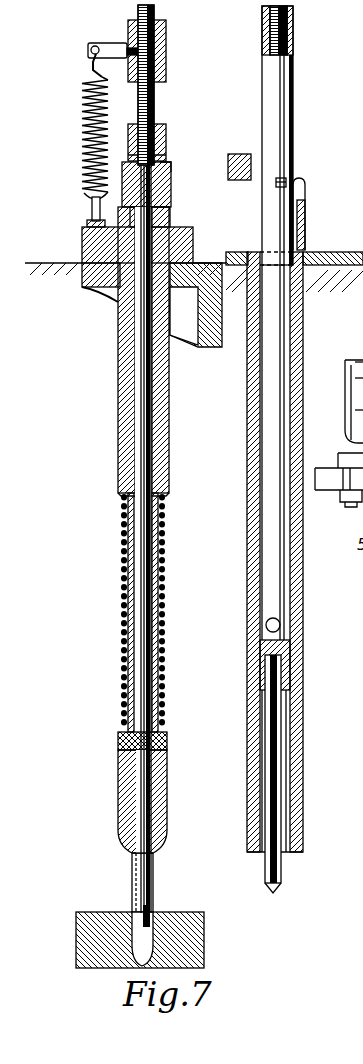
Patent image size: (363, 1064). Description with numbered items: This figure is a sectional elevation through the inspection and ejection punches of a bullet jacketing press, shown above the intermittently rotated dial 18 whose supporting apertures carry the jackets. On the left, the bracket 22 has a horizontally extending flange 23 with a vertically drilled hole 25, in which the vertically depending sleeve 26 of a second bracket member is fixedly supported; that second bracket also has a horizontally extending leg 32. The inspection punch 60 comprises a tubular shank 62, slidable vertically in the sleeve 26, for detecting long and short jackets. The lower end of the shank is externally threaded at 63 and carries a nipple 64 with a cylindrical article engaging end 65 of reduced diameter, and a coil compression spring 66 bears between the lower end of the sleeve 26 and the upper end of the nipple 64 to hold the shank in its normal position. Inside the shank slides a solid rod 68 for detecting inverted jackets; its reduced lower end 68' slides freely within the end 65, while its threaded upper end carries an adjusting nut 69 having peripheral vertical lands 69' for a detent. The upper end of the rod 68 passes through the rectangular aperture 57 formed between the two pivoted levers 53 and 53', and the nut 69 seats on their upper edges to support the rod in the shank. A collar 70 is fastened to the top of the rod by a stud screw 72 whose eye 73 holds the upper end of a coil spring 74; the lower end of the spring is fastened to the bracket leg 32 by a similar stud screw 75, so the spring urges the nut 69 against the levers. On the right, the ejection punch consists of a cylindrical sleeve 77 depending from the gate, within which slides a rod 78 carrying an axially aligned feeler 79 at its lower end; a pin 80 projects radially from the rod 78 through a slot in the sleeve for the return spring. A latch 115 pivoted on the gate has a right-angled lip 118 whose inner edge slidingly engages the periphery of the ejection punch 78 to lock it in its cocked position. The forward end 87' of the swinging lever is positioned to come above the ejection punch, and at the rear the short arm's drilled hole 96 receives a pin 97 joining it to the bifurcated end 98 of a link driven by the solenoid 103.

The dial 18 is at (90, 920).
The bracket 22 is at (209, 338).
The flange 23 is at (88, 276).
The vertically drilled hole 25 is at (112, 283).
The sleeve 26 is at (118, 394).
The leg 32 is at (190, 240).
The lever 53 is at (140, 213).
The lever 53' is at (164, 184).
The aperture 57 is at (171, 166).
The punch 60 is at (122, 590).
The tubular shank 62 is at (158, 636).
The threaded lower end 63 is at (158, 782).
The nipple 64 is at (166, 829).
The article engaging end 65 is at (152, 908).
The coil compression spring 66 is at (164, 570).
The rod 68 is at (131, 459).
The lower end of rod 68' is at (171, 909).
The adjusting nut 69 is at (165, 131).
The vertical lands 69' is at (167, 138).
The collar 70 is at (167, 57).
The stud screw 72 is at (115, 44).
The eye 73 is at (94, 46).
The coil spring 74 is at (80, 100).
The stud screw 75 is at (88, 221).
The cylindrical sleeve 77 is at (248, 464).
The rod 78 is at (268, 500).
The feeler 79 is at (284, 816).
The pin 80 is at (282, 623).
The forward end of lever 87' is at (239, 152).
The vertically drilled hole 96 is at (362, 410).
The pin 97 is at (362, 366).
The bifurcated end 98 is at (362, 379).
The solenoid 103 is at (362, 360).
The latch 115 is at (305, 214).
The lip 118 is at (289, 183).